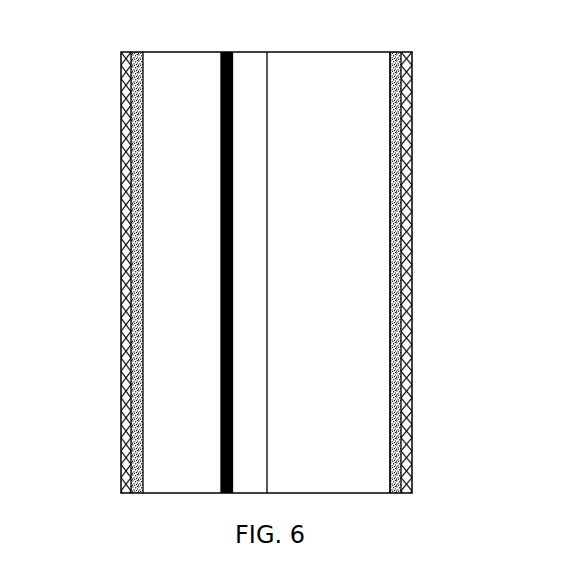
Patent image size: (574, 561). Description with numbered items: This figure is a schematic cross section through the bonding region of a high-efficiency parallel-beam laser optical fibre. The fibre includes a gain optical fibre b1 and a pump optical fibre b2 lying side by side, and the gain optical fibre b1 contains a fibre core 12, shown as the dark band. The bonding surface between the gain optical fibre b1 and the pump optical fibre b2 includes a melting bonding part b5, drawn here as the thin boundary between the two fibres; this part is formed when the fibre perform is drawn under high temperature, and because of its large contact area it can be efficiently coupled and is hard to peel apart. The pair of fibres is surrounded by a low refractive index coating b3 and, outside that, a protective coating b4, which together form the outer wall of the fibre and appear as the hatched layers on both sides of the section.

The gain optical fibre b1 is at (163, 146).
The pump optical fibre b2 is at (365, 337).
The low refractive index coating b3 is at (131, 204).
The protective coating b4 is at (126, 287).
The melting bonding part b5 is at (268, 216).
The fibre core 12 is at (222, 419).